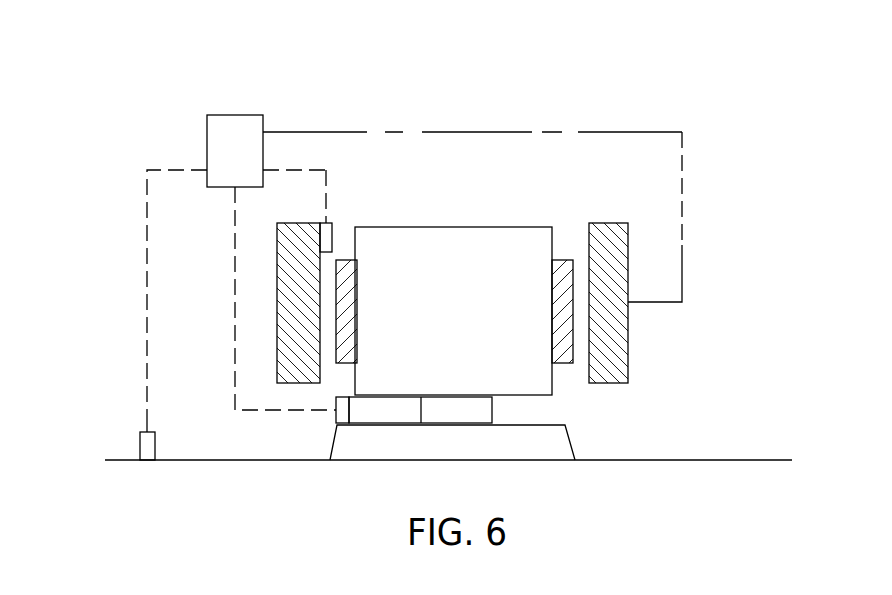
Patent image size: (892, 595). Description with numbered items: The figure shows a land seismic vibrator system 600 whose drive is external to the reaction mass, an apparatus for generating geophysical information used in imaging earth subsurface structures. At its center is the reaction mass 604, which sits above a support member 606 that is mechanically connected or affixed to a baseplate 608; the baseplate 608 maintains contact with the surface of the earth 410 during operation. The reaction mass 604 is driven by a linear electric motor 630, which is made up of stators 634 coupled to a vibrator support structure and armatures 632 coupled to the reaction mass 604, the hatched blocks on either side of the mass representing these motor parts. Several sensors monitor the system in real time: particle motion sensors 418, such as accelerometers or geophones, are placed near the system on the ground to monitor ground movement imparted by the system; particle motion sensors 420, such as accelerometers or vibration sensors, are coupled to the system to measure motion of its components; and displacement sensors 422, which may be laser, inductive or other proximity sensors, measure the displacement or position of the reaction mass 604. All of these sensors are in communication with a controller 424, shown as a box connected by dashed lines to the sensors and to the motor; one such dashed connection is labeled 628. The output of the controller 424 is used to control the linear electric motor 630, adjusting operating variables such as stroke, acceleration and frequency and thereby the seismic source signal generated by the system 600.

The seismic vibrator system 600 is at (635, 100).
The controller 424 is at (229, 115).
The reaction mass 604 is at (516, 227).
The displacement sensors 422 is at (332, 223).
The armatures 632 is at (357, 295).
The linear electric motor 630 is at (628, 260).
The stators 634 is at (628, 347).
The connection line 628 is at (147, 265).
The particle motion sensors 418 is at (140, 441).
The particle motion sensors 420 is at (336, 417).
The support member 606 is at (492, 410).
The baseplate 608 is at (569, 436).
The surface of the earth 410 is at (158, 461).